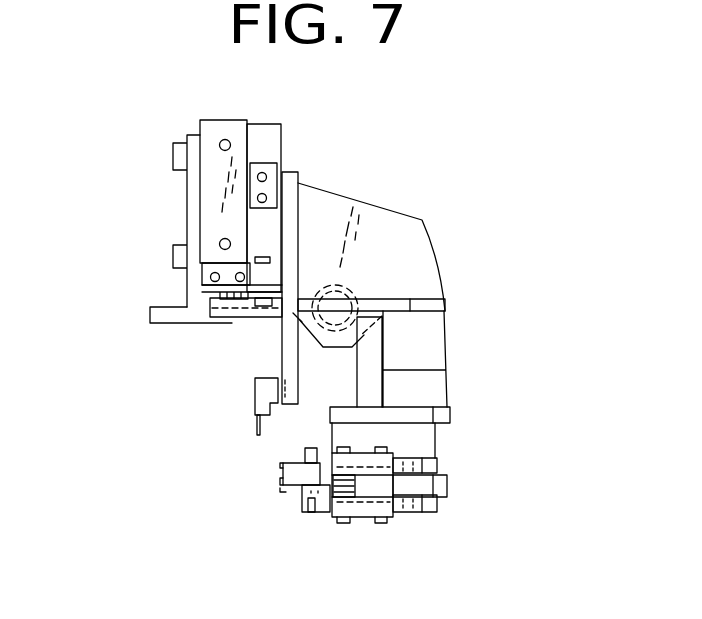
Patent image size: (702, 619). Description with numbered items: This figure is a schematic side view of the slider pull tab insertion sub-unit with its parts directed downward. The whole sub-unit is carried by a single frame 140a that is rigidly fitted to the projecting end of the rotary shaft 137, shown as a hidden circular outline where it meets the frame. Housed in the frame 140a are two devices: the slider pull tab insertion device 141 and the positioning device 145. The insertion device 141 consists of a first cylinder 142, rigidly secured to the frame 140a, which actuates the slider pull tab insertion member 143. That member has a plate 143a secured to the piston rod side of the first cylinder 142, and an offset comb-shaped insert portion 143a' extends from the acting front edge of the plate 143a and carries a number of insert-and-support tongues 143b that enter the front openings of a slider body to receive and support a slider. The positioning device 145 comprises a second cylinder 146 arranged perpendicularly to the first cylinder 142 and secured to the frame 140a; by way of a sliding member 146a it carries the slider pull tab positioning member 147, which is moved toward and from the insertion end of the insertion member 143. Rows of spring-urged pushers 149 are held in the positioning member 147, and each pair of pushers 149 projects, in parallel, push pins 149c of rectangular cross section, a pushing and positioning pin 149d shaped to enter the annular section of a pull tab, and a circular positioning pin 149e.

The rotary shaft 137 is at (357, 278).
The frame 140a is at (412, 263).
The slider pull tab insertion device 141 is at (172, 338).
The first cylinder 142 is at (218, 203).
The slider pull tab insertion member 143 is at (264, 346).
The plate 143a is at (204, 393).
The comb-shaped insert portion 143a' is at (195, 429).
The insert-and-support tongue 143b is at (281, 463).
The positioning device 145 is at (458, 523).
The second cylinder 146 is at (423, 385).
The sliding member 146a is at (415, 442).
The slider pull tab positioning member 147 is at (365, 518).
The pushers 149 is at (312, 512).
The push pins 149c is at (283, 467).
The pushing and positioning pin 149d is at (300, 483).
The positioning pin 149e is at (300, 497).